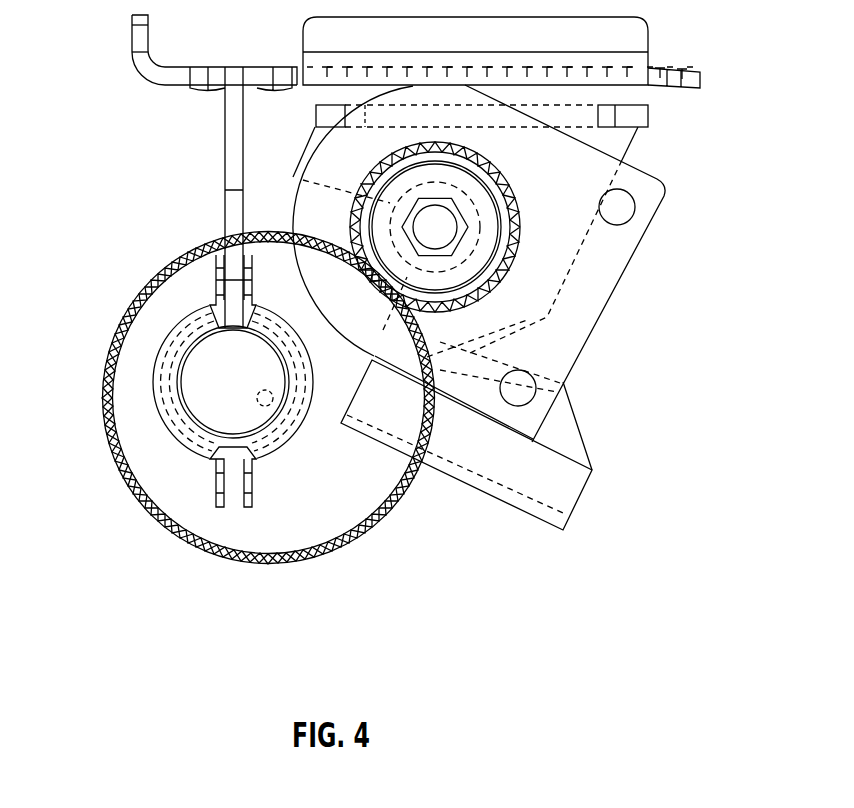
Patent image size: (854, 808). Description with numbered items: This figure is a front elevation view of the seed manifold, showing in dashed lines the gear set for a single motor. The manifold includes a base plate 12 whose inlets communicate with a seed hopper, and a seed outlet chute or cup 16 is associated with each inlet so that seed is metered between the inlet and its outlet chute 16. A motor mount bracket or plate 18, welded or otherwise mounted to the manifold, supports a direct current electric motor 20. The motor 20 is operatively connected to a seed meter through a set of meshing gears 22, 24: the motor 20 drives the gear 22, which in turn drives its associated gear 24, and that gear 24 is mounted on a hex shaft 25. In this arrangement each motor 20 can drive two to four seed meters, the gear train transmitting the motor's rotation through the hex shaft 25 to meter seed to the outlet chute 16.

The base plate 12 is at (662, 68).
The seed outlet chute 16 is at (586, 490).
The motor mount bracket 18 is at (225, 157).
The DC electric motor 20 is at (237, 378).
The gear 22 is at (261, 563).
The gear 24 is at (520, 253).
The hex shaft 25 is at (437, 228).